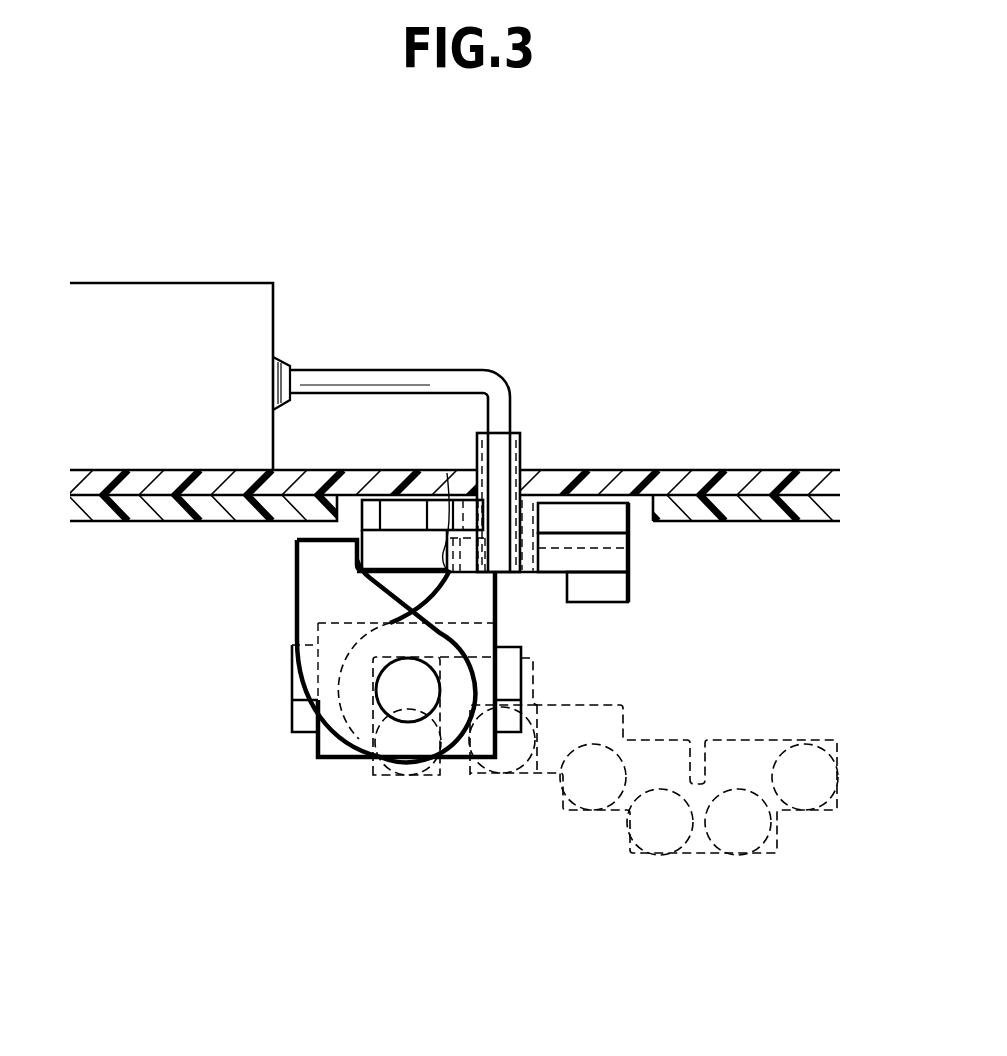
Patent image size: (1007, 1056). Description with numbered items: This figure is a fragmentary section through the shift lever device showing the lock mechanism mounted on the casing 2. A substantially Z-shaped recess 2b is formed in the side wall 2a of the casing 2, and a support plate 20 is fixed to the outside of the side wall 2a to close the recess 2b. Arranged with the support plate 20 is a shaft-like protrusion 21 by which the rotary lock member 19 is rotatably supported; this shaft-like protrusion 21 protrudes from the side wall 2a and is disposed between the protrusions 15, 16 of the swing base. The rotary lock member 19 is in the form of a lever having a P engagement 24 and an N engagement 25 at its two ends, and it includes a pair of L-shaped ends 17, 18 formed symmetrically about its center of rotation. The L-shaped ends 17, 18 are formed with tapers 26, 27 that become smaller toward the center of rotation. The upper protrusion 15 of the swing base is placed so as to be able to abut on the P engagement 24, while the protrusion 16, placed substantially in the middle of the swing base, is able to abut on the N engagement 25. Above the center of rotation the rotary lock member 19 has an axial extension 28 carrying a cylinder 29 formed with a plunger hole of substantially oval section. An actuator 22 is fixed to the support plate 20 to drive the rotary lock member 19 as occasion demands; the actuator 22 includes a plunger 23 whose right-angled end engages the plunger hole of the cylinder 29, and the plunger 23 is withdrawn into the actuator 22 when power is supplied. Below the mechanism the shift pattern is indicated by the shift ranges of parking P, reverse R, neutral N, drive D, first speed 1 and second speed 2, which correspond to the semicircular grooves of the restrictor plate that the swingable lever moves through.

The first speed range 1 is at (815, 795).
The casing 2 is at (750, 828).
The side wall 2a is at (807, 513).
The Z-shaped recess 2b is at (656, 508).
The protrusion 15 is at (313, 548).
The protrusion 16 is at (446, 520).
The L-shaped end 17 is at (387, 515).
The L-shaped end 18 is at (610, 520).
The rotary lock member 19 is at (626, 614).
The support plate 20 is at (148, 475).
The shaft-like protrusion 21 is at (515, 568).
The actuator 22 is at (242, 303).
The plunger 23 is at (443, 382).
The P engagement 24 is at (350, 545).
The N engagement 25 is at (630, 560).
The taper 26 is at (407, 550).
The taper 27 is at (557, 557).
The axial extension 28 is at (517, 488).
The cylinder 29 is at (522, 450).
The parking range P is at (408, 745).
The reverse range R is at (500, 745).
The neutral range N is at (587, 788).
The drive range D is at (660, 827).